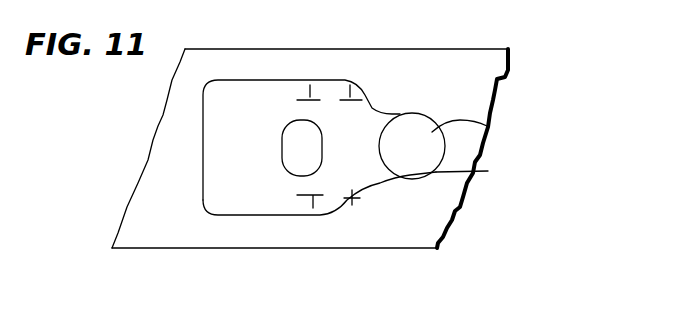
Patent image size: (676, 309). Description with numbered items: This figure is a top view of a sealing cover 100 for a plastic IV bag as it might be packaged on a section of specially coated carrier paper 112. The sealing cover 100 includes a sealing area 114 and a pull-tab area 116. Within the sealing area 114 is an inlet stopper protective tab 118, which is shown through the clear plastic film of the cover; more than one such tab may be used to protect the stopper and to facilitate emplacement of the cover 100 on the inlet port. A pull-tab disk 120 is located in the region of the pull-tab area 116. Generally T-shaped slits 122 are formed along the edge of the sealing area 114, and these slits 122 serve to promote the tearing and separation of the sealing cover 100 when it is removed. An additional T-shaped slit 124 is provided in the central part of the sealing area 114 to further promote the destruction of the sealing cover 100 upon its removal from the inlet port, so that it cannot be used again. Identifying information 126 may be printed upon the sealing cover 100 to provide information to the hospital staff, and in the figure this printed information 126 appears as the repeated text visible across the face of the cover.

The sealing cover 100 is at (418, 66).
The carrier paper 112 is at (505, 76).
The sealing area 114 is at (305, 237).
The pull-tab area 116 is at (427, 209).
The inlet stopper protective tab 118 is at (283, 158).
The pull-tab disk 120 is at (489, 123).
The T-shaped slits 122 is at (343, 86).
The T-shaped slit 124 is at (350, 142).
The identifying information 126 is at (240, 93).